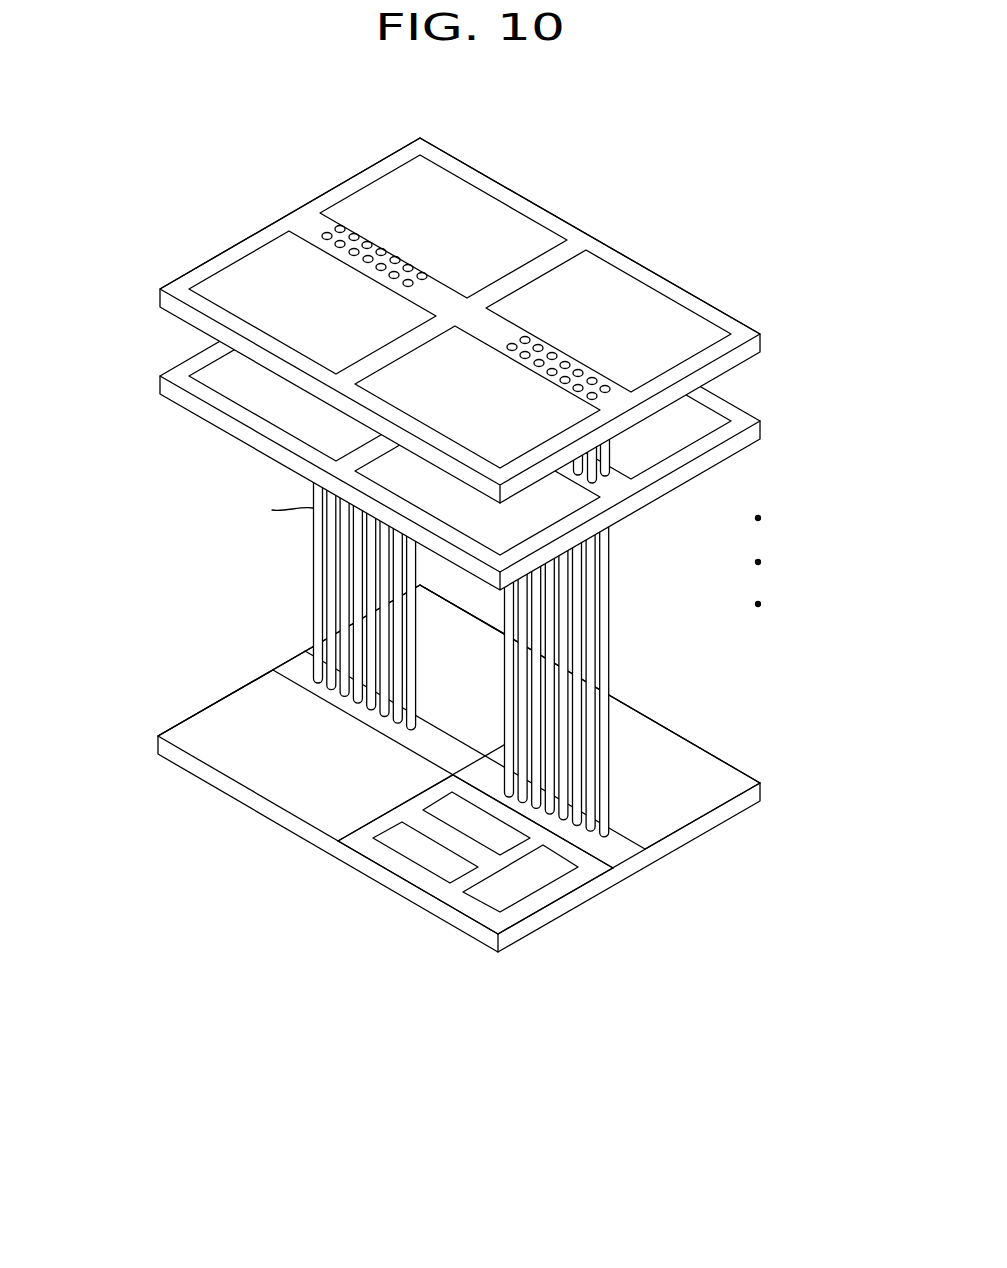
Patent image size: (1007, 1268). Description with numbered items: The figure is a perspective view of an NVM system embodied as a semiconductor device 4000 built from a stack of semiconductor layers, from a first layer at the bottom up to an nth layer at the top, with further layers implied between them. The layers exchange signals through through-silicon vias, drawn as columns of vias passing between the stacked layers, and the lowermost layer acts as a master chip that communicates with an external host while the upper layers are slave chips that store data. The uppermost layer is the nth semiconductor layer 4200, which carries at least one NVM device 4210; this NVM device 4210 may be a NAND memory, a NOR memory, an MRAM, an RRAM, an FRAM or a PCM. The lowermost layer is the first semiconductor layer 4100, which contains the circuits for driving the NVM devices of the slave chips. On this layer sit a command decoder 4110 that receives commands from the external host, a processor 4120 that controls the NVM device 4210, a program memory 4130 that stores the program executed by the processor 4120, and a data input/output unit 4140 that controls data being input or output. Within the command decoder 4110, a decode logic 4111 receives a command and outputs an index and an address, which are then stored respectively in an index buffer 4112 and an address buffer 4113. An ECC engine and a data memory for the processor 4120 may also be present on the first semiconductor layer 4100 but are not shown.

The semiconductor device 4000 is at (704, 184).
The nth semiconductor layer 4200 is at (158, 300).
The NVM device 4210 is at (518, 230).
The first semiconductor layer 4100 is at (158, 746).
The command decoder 4110 is at (360, 842).
The decode logic 4111 is at (490, 897).
The index buffer 4112 is at (447, 813).
The address buffer 4113 is at (427, 860).
The processor 4120 is at (689, 805).
The program memory 4130 is at (477, 647).
The data input/output unit 4140 is at (256, 723).